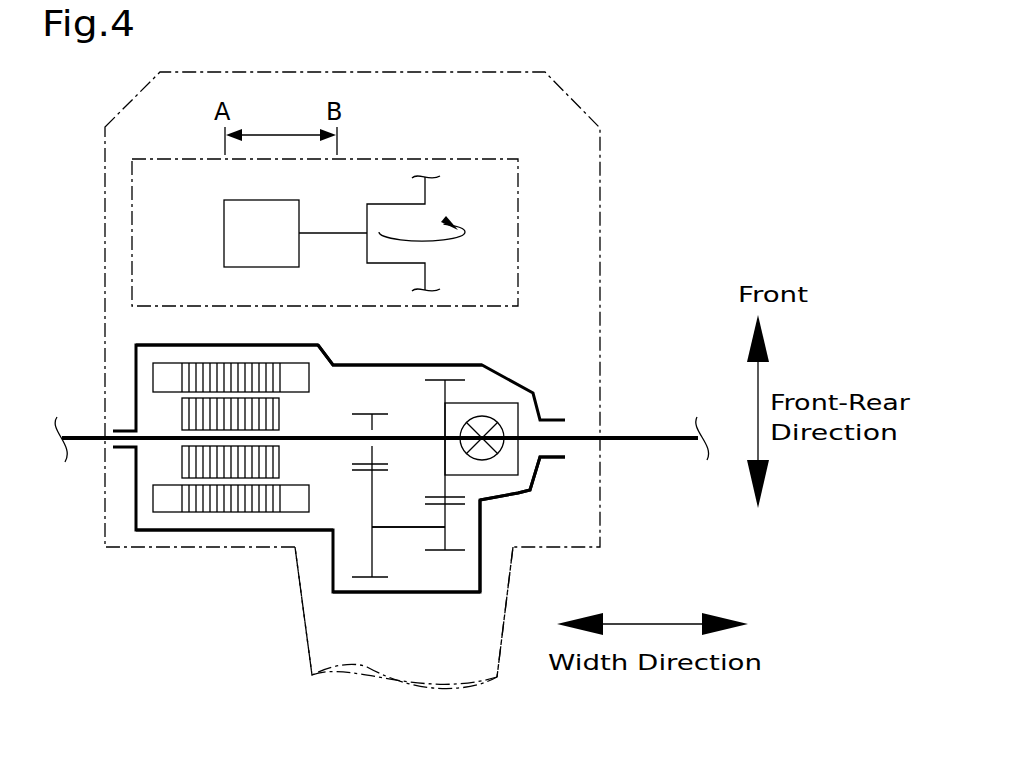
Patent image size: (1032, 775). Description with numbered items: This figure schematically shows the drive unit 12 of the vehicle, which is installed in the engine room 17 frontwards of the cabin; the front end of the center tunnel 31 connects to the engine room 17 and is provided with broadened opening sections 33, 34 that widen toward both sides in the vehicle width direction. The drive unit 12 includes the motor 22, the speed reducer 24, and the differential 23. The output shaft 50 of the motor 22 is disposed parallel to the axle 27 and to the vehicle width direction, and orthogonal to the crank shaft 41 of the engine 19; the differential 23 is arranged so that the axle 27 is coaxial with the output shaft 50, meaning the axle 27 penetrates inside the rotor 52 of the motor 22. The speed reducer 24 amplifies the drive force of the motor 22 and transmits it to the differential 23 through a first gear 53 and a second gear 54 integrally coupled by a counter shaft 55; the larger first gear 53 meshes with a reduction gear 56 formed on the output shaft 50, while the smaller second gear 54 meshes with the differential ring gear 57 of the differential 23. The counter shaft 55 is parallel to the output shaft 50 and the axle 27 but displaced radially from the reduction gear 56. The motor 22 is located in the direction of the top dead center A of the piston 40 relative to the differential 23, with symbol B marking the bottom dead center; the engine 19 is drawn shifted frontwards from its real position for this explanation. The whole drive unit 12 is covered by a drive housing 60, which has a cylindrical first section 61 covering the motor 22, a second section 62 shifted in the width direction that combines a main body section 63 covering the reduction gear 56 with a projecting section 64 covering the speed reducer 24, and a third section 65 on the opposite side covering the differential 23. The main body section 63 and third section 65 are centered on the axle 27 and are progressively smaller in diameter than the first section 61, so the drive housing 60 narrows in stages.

The drive unit 12 is at (580, 368).
The engine room 17 is at (600, 148).
The engine 19 is at (518, 233).
The motor 22 is at (167, 520).
The differential 23 is at (505, 393).
The speed reducer 24 is at (407, 588).
The axle 27 is at (82, 443).
The center tunnel 31 is at (312, 658).
The broadened opening section 33 is at (513, 567).
The broadened opening section 34 is at (295, 558).
The piston 40 is at (230, 218).
The crank shaft 41 is at (425, 278).
The output shaft 50 is at (331, 429).
The rotor 52 is at (182, 415).
The first gear 53 is at (357, 542).
The second gear 54 is at (453, 551).
The counter shaft 55 is at (405, 527).
The reduction gear 56 is at (382, 413).
The differential ring gear 57 is at (452, 380).
The drive housing 60 is at (128, 342).
The first section 61 is at (203, 533).
The second section 62 is at (337, 605).
The main body section 63 is at (377, 364).
The projecting section 64 is at (434, 597).
The third section 65 is at (507, 496).